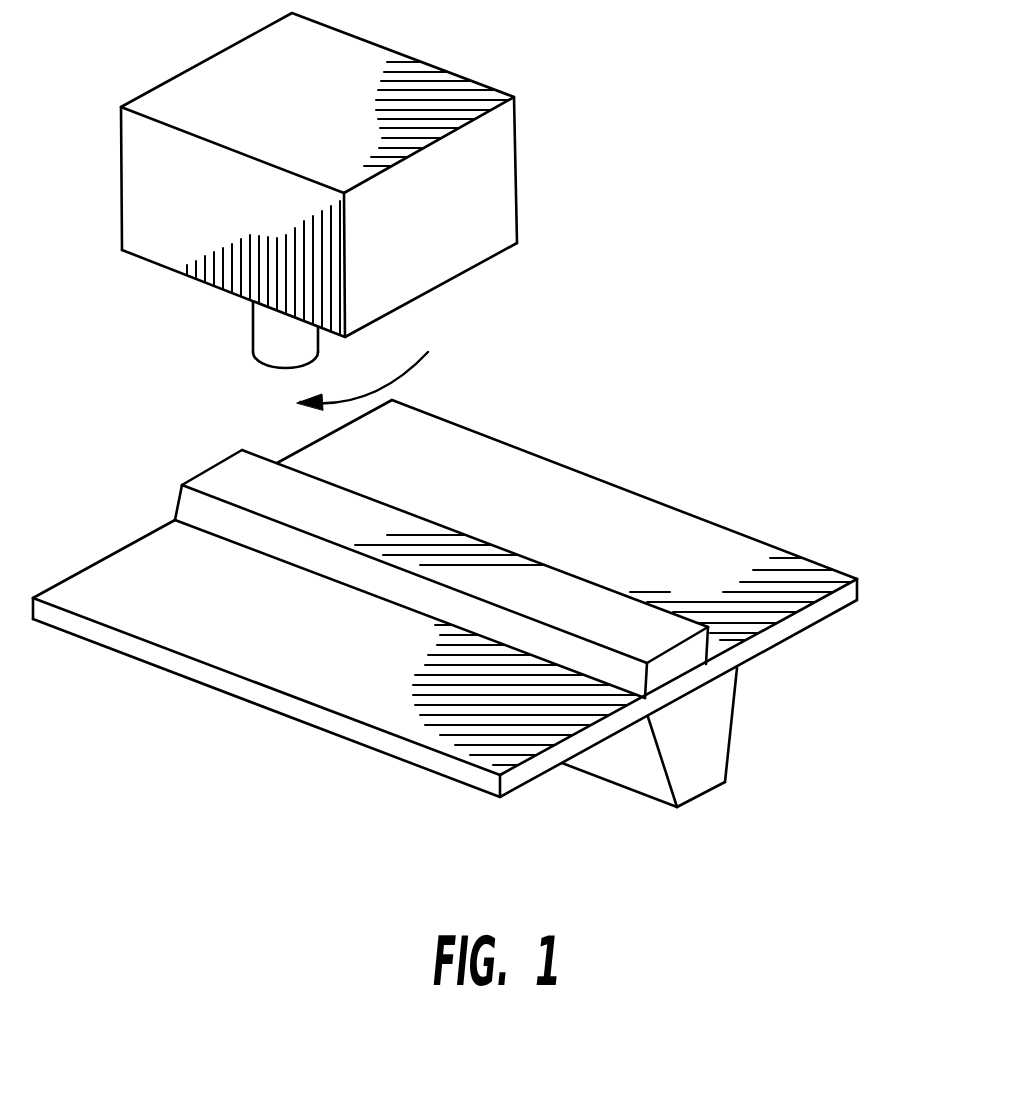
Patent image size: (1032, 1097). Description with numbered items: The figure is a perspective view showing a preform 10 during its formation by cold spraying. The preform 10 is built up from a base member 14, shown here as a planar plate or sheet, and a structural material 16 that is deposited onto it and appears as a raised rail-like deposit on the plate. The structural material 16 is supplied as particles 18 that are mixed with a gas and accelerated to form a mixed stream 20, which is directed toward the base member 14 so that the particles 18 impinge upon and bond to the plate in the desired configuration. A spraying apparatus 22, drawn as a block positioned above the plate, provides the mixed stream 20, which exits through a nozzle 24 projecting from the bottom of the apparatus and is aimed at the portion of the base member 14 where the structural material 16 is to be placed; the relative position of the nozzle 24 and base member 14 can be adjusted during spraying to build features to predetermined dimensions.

The preform 10 is at (738, 338).
The base member 14 is at (797, 555).
The structural material 16 is at (735, 715).
The particles 18 is at (282, 430).
The mixed stream 20 is at (373, 357).
The spraying apparatus 22 is at (453, 70).
The nozzle 24 is at (253, 342).